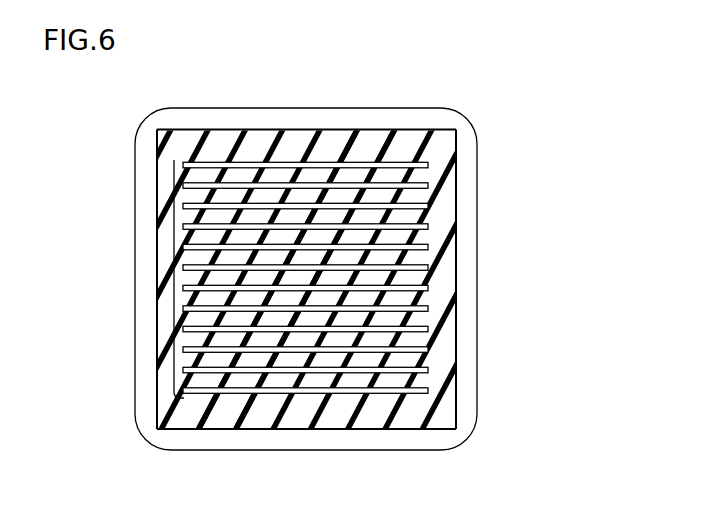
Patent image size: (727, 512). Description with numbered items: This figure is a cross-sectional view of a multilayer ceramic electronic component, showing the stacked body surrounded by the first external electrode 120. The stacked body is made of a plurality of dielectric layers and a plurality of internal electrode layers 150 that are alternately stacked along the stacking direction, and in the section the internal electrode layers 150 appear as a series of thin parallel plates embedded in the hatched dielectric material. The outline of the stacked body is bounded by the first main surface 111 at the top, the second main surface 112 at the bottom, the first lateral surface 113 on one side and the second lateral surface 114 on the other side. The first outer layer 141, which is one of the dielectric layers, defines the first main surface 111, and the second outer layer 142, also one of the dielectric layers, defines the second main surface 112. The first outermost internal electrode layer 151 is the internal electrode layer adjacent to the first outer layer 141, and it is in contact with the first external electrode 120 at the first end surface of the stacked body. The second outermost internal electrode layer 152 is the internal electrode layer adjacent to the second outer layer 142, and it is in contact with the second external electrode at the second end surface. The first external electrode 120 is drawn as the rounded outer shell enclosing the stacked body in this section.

The first main surface 111 is at (422, 129).
The second main surface 112 is at (392, 430).
The first lateral surface 113 is at (457, 228).
The second lateral surface 114 is at (156, 228).
The first external electrode 120 is at (143, 352).
The first outer layer 141 is at (341, 157).
The second outer layer 142 is at (272, 401).
The internal electrode layers 150 is at (166, 283).
The first outermost internal electrode layer 151 is at (305, 162).
The second outermost internal electrode layer 152 is at (320, 394).